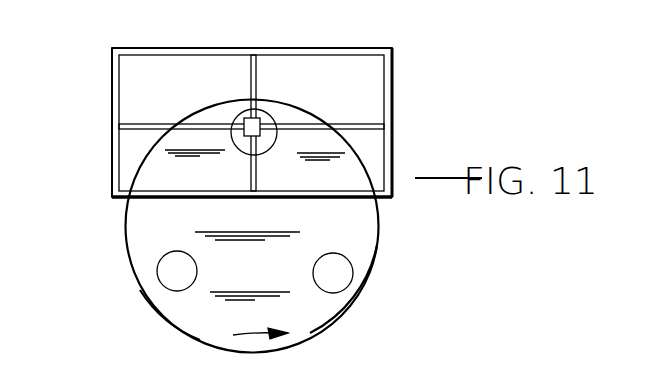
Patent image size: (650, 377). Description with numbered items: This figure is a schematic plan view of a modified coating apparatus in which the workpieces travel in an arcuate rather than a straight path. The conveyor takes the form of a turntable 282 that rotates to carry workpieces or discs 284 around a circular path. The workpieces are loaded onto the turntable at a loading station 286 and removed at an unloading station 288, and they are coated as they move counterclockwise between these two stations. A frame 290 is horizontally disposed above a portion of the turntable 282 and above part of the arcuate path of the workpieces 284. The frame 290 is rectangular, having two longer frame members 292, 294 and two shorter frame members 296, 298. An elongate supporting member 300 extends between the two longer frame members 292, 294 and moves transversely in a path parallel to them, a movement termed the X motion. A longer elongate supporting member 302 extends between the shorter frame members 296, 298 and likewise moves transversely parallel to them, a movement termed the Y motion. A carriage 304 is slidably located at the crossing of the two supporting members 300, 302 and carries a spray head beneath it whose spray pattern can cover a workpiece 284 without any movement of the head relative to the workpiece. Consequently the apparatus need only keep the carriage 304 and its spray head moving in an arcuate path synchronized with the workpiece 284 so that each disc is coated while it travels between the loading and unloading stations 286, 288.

The turntable 282 is at (382, 237).
The workpieces or discs 284 is at (333, 293).
The loading station 286 is at (369, 290).
The unloading station 288 is at (168, 319).
The frame 290 is at (398, 88).
The longer frame member 292 is at (289, 198).
The longer frame member 294 is at (237, 48).
The shorter frame member 296 is at (392, 133).
The shorter frame member 298 is at (112, 151).
The elongate supporting member 300 is at (250, 166).
The longer elongate supporting member 302 is at (155, 124).
The carriage 304 is at (272, 112).